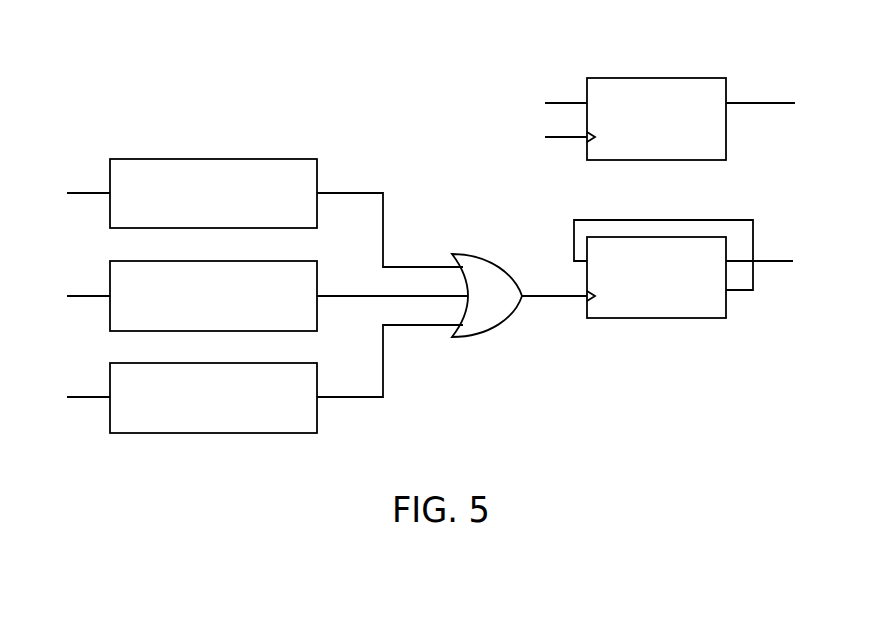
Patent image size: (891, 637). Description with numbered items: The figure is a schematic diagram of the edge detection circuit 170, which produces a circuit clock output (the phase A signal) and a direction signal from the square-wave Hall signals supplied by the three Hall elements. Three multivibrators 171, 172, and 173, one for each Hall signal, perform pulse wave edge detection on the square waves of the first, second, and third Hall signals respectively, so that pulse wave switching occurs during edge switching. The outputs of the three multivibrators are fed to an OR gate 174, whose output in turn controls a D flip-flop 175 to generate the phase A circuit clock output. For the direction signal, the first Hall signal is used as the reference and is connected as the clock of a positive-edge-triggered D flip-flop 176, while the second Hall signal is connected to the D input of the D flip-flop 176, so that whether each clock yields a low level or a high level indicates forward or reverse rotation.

The edge detection circuit 170 is at (392, 36).
The multivibrator 171 is at (185, 163).
The multivibrator 172 is at (185, 265).
The multivibrator 173 is at (185, 367).
The OR gate 174 is at (497, 320).
The D flip-flop 175 is at (650, 318).
The D flip-flop 176 is at (642, 78).